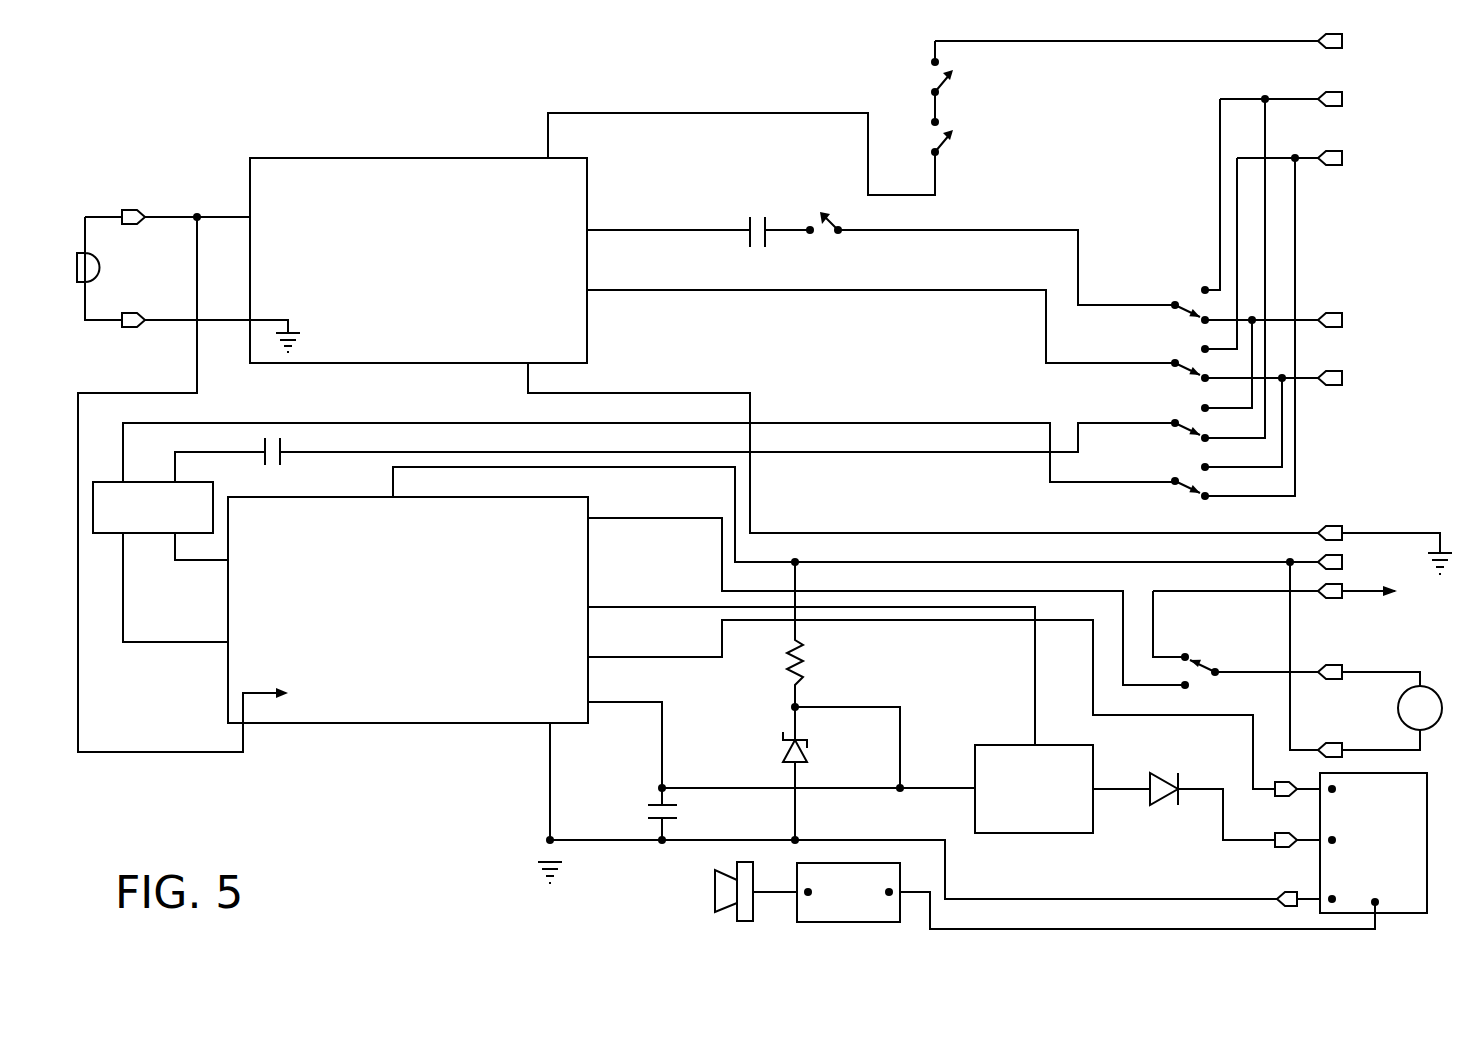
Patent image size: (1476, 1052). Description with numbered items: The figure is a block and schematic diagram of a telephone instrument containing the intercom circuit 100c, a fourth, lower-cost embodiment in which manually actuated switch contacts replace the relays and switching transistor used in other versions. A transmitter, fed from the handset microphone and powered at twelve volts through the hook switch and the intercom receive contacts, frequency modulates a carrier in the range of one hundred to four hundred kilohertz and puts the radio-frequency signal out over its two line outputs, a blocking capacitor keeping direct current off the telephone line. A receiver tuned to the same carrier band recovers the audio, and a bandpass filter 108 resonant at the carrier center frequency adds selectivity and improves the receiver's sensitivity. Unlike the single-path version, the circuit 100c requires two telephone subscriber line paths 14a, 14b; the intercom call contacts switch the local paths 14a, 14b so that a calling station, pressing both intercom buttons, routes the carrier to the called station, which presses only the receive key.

The intercom circuit 100c is at (158, 774).
The bandpass filter 108 is at (157, 533).
The telephone subscriber line path 14a is at (1393, 92).
The telephone subscriber line path 14b is at (1393, 313).